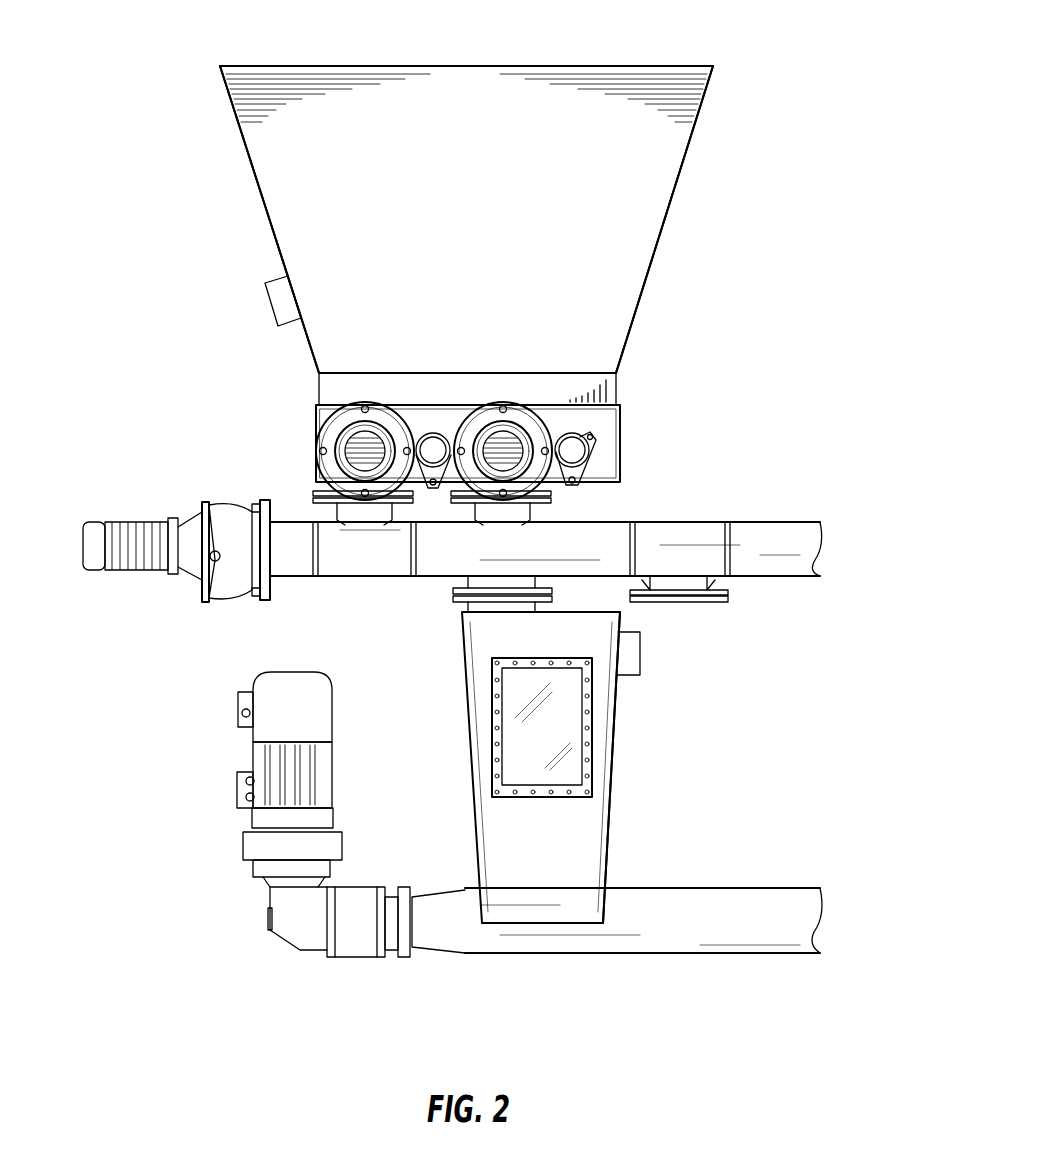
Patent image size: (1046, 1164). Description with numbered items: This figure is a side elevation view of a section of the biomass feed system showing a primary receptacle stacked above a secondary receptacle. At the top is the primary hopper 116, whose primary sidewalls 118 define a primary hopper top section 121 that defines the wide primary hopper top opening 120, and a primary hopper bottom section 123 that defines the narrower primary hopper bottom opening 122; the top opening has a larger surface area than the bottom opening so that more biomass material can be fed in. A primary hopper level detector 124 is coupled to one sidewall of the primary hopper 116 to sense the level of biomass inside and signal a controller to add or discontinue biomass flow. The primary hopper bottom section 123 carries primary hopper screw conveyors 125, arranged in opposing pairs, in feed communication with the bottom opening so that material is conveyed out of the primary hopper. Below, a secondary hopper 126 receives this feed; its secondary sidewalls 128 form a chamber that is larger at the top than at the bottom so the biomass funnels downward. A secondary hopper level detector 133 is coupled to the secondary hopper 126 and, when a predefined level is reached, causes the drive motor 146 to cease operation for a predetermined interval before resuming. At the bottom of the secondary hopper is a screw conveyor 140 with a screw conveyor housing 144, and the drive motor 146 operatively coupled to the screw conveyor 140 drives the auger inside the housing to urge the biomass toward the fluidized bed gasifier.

The primary hopper top opening 120 is at (557, 63).
The primary hopper top section 121 is at (225, 108).
The primary sidewalls 118 is at (310, 352).
The primary hopper 116 is at (623, 352).
The primary hopper level detector 124 is at (267, 302).
The primary hopper bottom section 123 is at (310, 430).
The primary hopper screw conveyors 125 is at (320, 460).
The primary hopper bottom opening 122 is at (558, 490).
The secondary sidewalls 128 is at (612, 768).
The secondary hopper 126 is at (610, 835).
The secondary hopper level detector 133 is at (632, 658).
The screw conveyor housing 144 is at (650, 953).
The drive motor 146 is at (333, 785).
The screw conveyor 140 is at (572, 982).